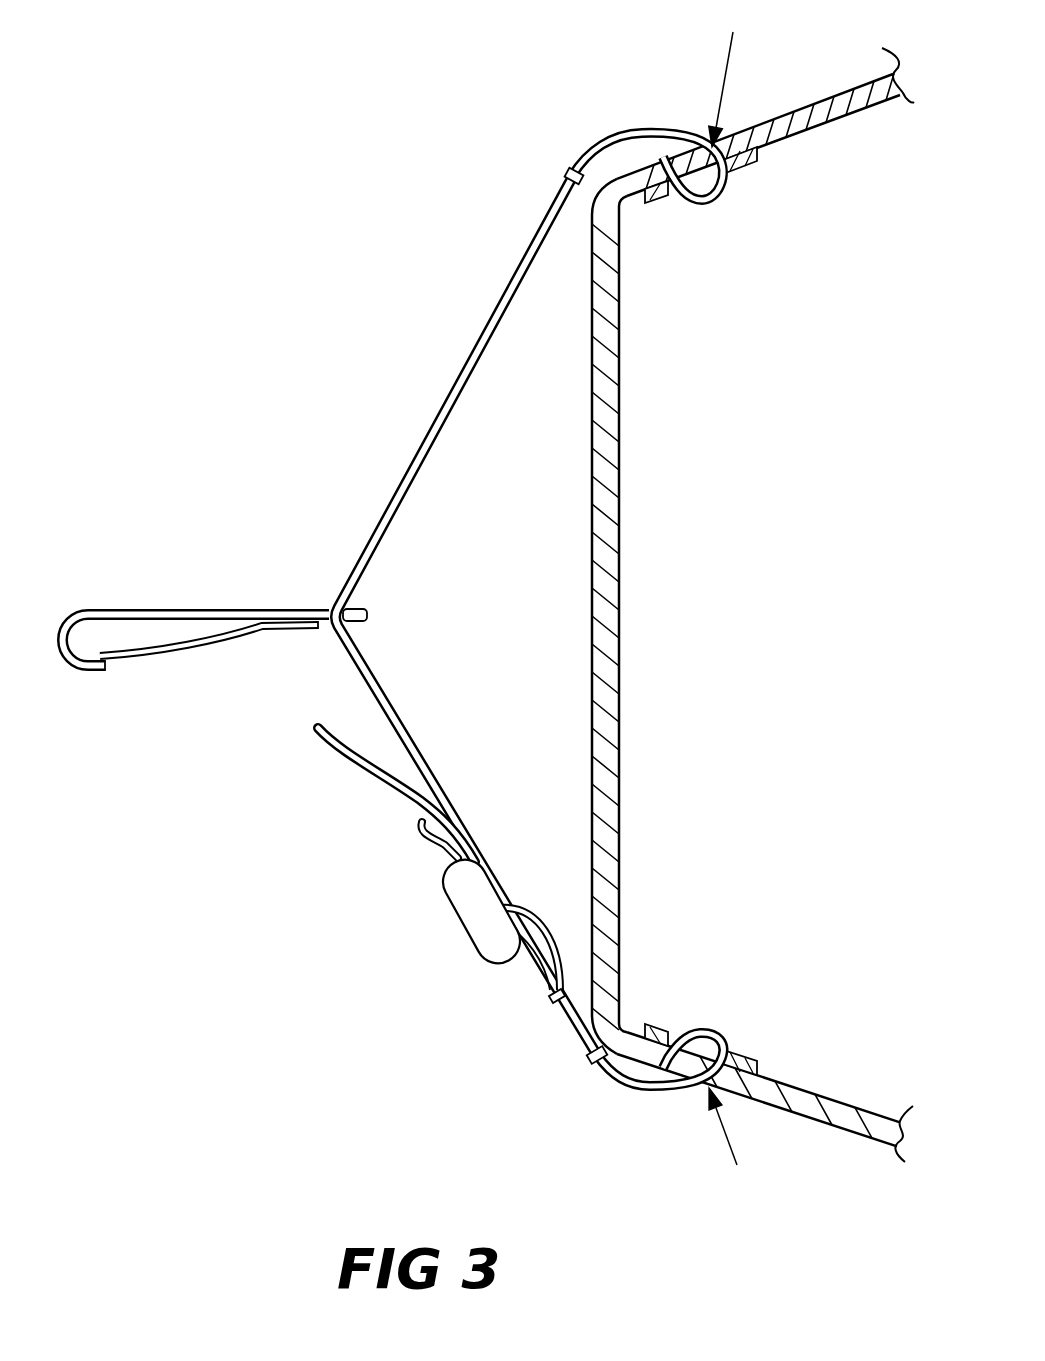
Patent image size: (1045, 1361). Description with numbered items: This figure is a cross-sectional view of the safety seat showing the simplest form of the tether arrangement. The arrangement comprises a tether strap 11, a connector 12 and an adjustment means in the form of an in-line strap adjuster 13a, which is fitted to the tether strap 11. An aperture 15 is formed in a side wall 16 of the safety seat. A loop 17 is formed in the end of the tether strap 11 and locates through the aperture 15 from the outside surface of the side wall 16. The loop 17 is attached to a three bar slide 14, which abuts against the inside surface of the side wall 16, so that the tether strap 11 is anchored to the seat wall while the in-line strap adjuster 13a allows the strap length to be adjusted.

The tether strap 11 is at (468, 360).
The connector 12 is at (166, 609).
The in-line strap adjuster 13a is at (470, 923).
The three bar slide 14 is at (753, 163).
The aperture 15 is at (735, 604).
The side wall 16 is at (793, 120).
The loop 17 is at (654, 133).